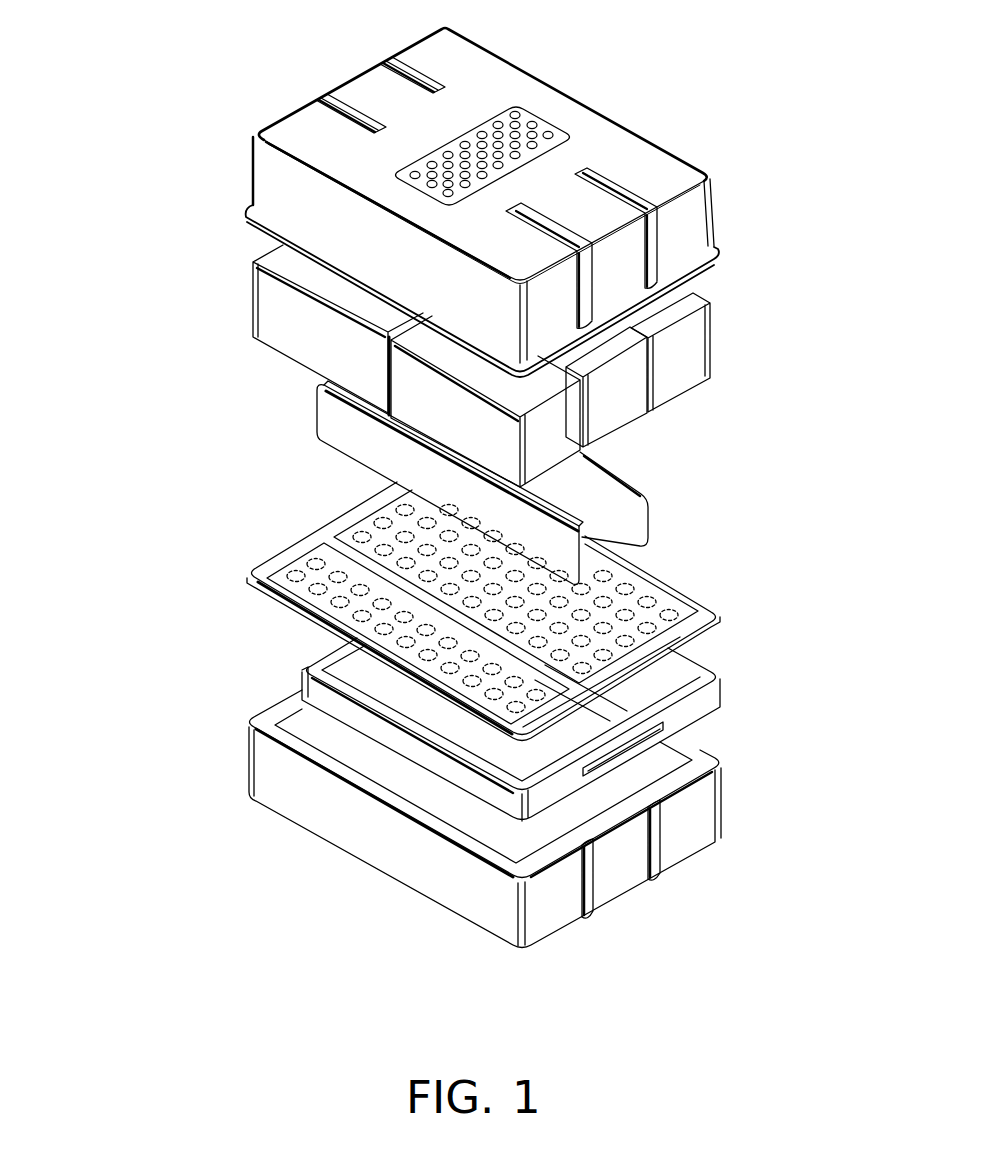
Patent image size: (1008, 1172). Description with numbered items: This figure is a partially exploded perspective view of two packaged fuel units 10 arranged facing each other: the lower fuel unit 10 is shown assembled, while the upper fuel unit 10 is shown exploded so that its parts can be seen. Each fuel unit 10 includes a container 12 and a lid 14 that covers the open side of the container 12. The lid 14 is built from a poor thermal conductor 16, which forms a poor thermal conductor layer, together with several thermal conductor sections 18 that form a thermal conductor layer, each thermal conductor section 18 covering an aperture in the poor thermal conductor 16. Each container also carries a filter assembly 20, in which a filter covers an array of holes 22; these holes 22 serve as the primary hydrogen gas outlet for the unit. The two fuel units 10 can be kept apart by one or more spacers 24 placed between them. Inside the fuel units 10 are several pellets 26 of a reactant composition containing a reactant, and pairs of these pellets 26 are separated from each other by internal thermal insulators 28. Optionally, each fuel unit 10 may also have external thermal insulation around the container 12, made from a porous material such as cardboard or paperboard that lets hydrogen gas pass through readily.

The fuel unit 10 is at (132, 14).
The container 12 is at (253, 165).
The lid 14 is at (265, 557).
The poor thermal conductor 16 is at (323, 528).
The thermal conductor sections 18 is at (388, 524).
The filter assembly 20 is at (487, 108).
The array of holes 22 is at (548, 132).
The spacer 24 is at (700, 702).
The pellets 26 is at (267, 302).
The internal thermal insulators 28 is at (335, 423).